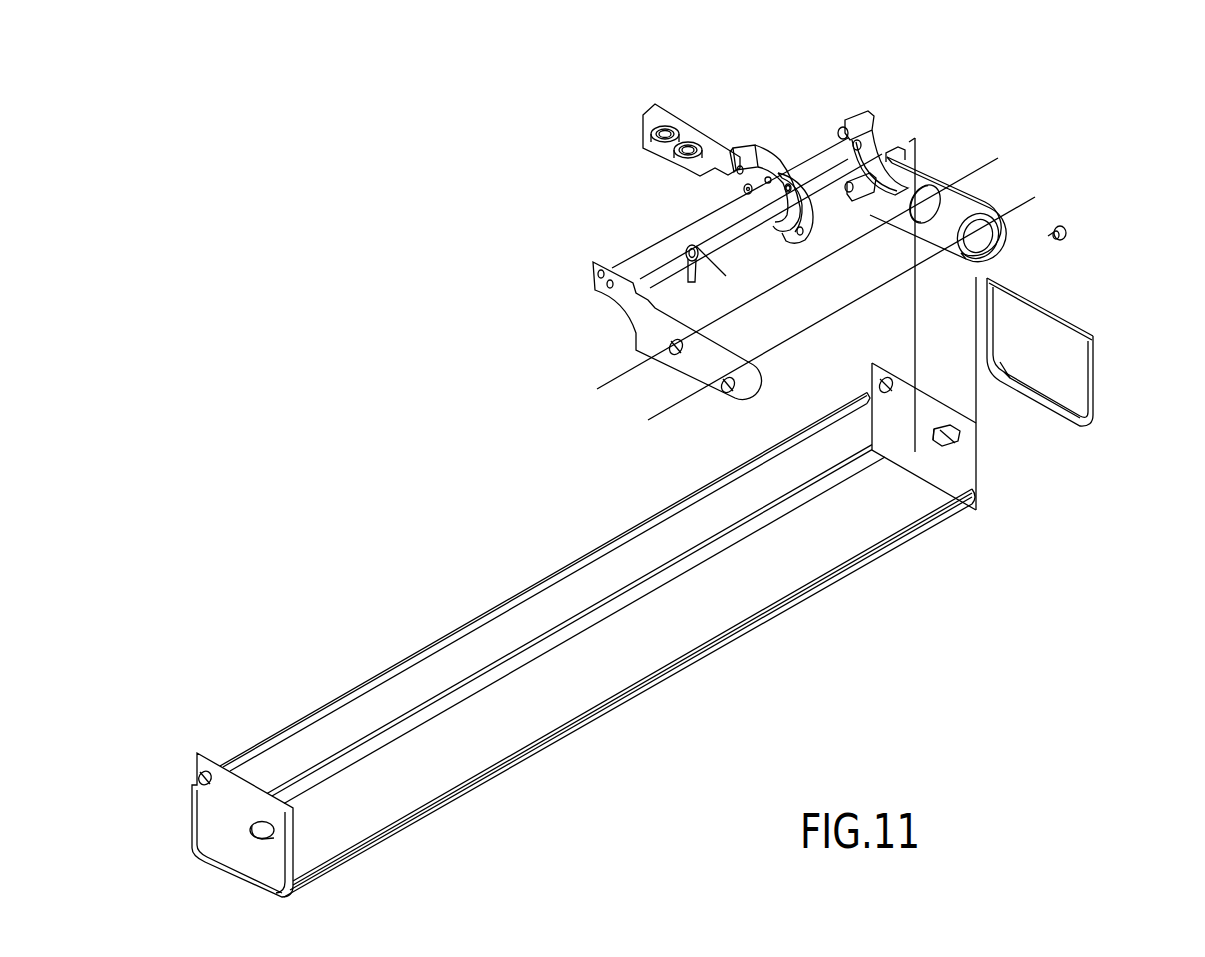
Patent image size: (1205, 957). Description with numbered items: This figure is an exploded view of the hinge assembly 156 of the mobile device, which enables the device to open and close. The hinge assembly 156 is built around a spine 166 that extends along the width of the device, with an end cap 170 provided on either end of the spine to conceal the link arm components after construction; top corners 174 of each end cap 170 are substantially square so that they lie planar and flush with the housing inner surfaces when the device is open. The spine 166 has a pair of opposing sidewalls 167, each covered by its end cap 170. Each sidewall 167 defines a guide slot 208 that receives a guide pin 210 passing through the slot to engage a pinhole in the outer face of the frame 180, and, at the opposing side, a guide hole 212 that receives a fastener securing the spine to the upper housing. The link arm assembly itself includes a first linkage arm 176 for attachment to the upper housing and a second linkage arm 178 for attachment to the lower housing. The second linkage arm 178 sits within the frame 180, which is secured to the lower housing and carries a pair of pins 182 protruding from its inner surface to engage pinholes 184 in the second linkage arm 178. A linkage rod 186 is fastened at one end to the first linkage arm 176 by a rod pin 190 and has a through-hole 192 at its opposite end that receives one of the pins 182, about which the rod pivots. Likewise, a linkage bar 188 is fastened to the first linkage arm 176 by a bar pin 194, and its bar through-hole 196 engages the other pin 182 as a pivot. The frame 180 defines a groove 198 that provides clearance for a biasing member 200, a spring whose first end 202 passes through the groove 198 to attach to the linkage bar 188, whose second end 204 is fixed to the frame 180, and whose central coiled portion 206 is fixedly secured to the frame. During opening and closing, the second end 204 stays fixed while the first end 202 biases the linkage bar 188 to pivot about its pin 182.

The hinge assembly 156 is at (338, 352).
The spine 166 is at (640, 697).
The sidewall 167 is at (960, 488).
The end cap 170 is at (1060, 315).
The top corner 174 is at (1093, 328).
The first linkage arm 176 is at (677, 118).
The second linkage arm 178 is at (630, 345).
The frame 180 is at (1002, 212).
The pin 182 is at (870, 140).
The pinhole 184 is at (606, 286).
The linkage rod 186 is at (757, 150).
The linkage bar 188 is at (812, 240).
The rod pin 190 is at (737, 165).
The through-hole 192 is at (765, 180).
The bar pin 194 is at (745, 189).
The bar through-hole 196 is at (789, 184).
The groove 198 is at (872, 168).
The biasing member 200 is at (668, 248).
The first end 202 is at (757, 291).
The second end 204 is at (692, 282).
The coiled portion 206 is at (694, 246).
The guide slot 208 is at (960, 440).
The guide pin 210 is at (1068, 233).
The guide hole 212 is at (886, 383).